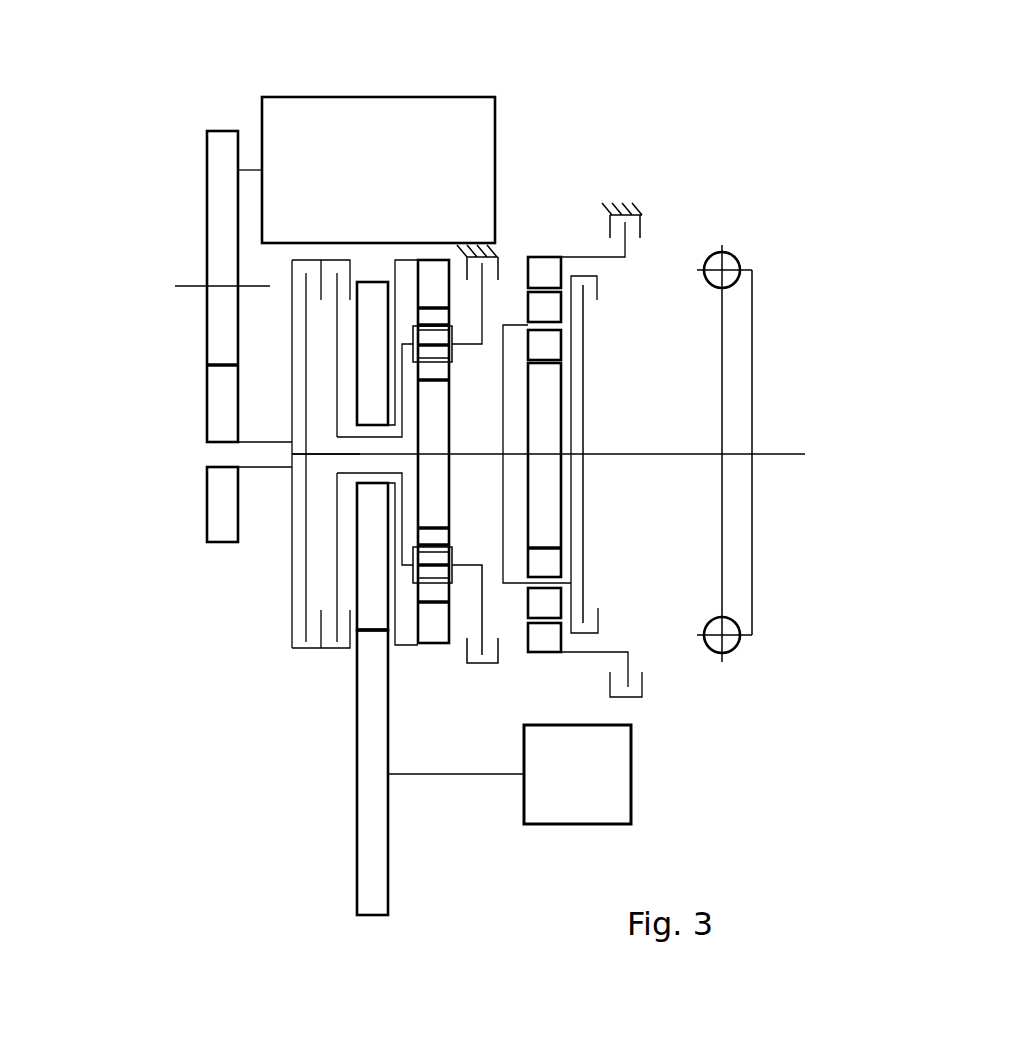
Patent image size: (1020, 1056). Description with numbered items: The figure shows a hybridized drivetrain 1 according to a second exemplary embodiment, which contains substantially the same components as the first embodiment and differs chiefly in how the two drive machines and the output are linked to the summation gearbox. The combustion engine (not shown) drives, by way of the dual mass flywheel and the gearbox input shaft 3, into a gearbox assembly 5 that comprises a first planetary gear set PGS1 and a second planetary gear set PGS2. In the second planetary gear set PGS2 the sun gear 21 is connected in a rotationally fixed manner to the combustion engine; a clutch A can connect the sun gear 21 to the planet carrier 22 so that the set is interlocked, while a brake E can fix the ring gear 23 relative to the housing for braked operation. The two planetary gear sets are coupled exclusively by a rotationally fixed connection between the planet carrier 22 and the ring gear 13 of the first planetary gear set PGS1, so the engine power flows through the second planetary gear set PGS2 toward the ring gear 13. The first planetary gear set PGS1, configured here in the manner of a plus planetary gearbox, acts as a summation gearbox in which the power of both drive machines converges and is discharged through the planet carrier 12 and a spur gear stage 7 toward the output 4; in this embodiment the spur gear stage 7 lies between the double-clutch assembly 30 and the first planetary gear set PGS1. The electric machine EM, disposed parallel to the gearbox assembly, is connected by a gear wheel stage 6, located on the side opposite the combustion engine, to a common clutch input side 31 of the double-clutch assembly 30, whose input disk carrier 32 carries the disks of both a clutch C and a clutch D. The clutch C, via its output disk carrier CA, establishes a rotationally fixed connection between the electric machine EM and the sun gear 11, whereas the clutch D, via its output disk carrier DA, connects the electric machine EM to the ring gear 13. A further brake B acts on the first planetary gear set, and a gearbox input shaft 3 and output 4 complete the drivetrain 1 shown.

The hybridized drivetrain 1 is at (698, 153).
The gearbox input shaft 3 is at (778, 457).
The output 4 is at (578, 788).
The gearbox assembly 5 is at (728, 207).
The gear wheel stage 6 is at (220, 265).
The spur gear stage 7 is at (368, 732).
The sun gear 11 is at (435, 490).
The planet carrier 12 is at (472, 566).
The ring gear 13 is at (432, 278).
The sun gear 21 is at (562, 408).
The planet carrier 22 is at (571, 323).
The ring gear 23 is at (556, 255).
The double-clutch assembly 30 is at (273, 380).
The common clutch input side 31 is at (290, 328).
The input disk carrier 32 is at (321, 258).
The output disk carrier DA is at (334, 402).
The output disk carrier CA is at (318, 457).
The electric machine EM is at (366, 170).
The clutch C is at (304, 475).
The clutch D is at (340, 475).
The clutch A is at (599, 454).
The brake B is at (485, 291).
The brake E is at (610, 230).
The first planetary gear set PGS1 is at (434, 666).
The second planetary gear set PGS2 is at (546, 668).